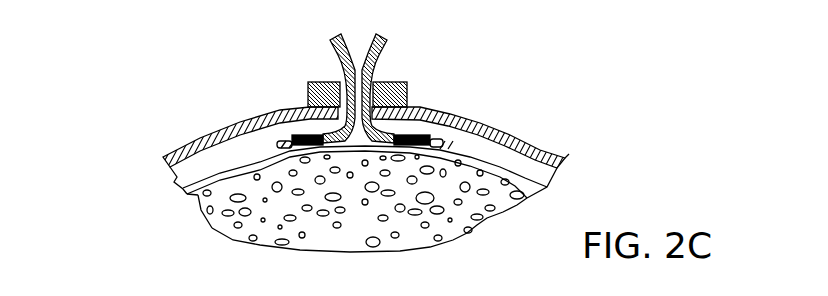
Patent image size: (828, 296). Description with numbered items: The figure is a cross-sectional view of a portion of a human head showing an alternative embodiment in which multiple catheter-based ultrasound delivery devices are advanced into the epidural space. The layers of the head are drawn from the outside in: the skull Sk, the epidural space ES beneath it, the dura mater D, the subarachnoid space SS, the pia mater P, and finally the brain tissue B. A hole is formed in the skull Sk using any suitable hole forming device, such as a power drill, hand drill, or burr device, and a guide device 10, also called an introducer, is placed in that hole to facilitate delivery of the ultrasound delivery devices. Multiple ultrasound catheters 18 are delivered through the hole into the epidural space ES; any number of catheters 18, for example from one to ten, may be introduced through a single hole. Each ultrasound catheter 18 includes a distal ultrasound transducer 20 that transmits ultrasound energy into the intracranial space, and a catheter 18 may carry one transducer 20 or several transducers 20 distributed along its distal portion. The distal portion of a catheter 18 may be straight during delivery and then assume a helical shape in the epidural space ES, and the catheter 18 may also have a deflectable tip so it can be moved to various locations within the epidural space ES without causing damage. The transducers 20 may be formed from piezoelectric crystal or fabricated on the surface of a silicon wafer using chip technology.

The guide device 10 is at (325, 78).
The ultrasound catheter 18 is at (371, 35).
The distal ultrasound transducer 20 is at (297, 131).
The skull Sk is at (447, 110).
The epidural space ES is at (495, 147).
The dura mater D is at (184, 193).
The pia mater P is at (197, 195).
The subarachnoid space SS is at (239, 168).
The brain tissue B is at (361, 238).